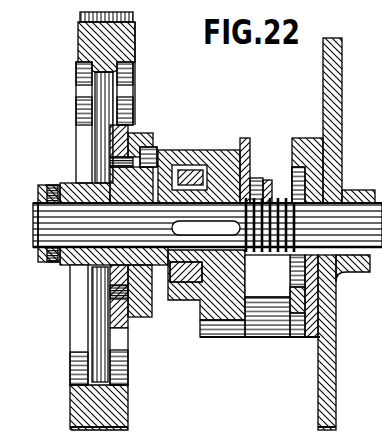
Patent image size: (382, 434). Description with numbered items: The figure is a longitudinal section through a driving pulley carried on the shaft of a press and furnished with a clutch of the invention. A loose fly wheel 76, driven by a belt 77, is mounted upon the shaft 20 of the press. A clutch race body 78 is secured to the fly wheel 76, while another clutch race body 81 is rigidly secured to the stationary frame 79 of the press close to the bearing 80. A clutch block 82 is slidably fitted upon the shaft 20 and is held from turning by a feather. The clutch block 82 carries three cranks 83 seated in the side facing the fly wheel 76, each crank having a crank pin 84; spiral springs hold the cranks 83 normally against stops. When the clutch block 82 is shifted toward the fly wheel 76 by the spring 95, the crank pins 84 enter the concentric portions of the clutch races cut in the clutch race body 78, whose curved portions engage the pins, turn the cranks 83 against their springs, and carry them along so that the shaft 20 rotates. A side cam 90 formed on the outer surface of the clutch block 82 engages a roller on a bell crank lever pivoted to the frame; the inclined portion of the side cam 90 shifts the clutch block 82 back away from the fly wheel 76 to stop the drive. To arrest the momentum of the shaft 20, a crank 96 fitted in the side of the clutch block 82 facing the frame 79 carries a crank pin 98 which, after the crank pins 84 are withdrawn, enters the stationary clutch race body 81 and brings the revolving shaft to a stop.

The shaft 20 is at (33, 219).
The fly wheel 76 is at (70, 400).
The belt 77 is at (133, 18).
The clutch race body 78 is at (143, 313).
The stationary frame 79 is at (318, 393).
The bearing 80 is at (358, 272).
The clutch race body 81 is at (297, 330).
The clutch block 82 is at (218, 158).
The cranks 83 is at (157, 147).
The crank pins 84 is at (147, 140).
The side cam 90 is at (177, 253).
The spring 95 is at (276, 255).
The crank 96 is at (255, 178).
The crank pin 98 is at (268, 180).